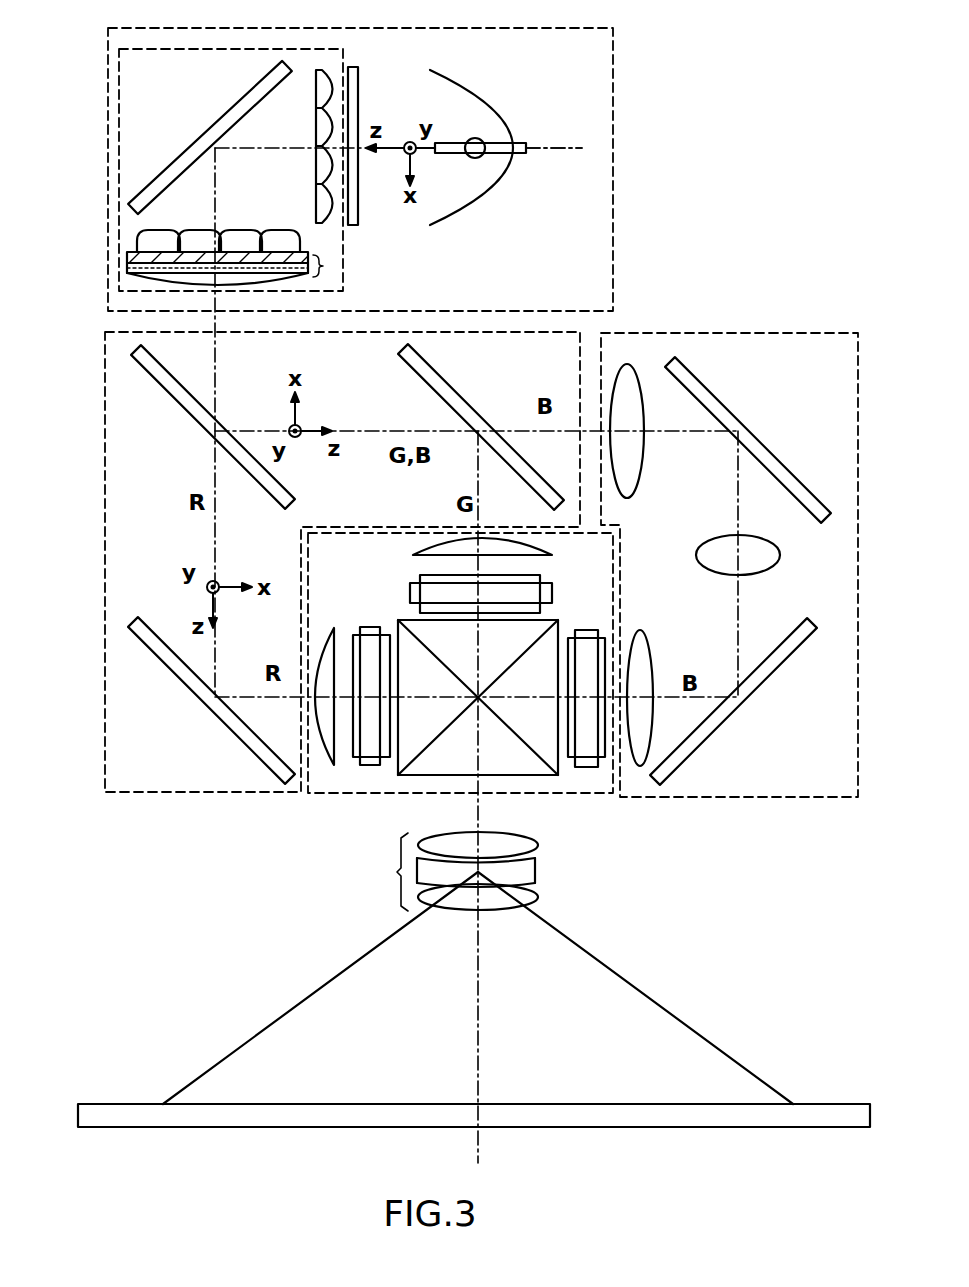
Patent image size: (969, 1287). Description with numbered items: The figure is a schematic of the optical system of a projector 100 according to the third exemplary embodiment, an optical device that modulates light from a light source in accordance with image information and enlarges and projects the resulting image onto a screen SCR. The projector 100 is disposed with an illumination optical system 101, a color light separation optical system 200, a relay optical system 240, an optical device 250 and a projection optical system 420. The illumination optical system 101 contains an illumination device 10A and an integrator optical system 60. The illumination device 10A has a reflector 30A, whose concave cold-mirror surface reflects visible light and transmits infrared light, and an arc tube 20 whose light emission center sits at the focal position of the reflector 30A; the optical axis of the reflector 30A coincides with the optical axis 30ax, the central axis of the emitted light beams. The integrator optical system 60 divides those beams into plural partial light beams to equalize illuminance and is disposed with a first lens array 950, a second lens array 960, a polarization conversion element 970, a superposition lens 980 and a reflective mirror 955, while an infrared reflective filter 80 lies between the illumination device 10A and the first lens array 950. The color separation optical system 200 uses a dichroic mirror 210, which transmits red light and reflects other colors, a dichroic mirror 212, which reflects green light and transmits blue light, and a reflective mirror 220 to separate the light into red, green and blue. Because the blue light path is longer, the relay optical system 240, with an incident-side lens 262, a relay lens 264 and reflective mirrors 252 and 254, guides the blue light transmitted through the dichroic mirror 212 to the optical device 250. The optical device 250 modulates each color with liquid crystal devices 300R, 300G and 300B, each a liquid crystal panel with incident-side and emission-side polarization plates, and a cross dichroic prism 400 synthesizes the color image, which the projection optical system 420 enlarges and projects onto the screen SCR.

The projector 100 is at (667, 42).
The illumination optical system 101 is at (108, 127).
The integrator optical system 60 is at (118, 185).
The reflective mirror 955 is at (268, 82).
The first lens array 950 is at (324, 226).
The infrared reflective filter 80 is at (353, 67).
The second lens array 960 is at (260, 231).
The polarization conversion element 970 is at (325, 266).
The superposition lens 980 is at (284, 288).
The reflector 30A is at (487, 104).
The arc tube 20 is at (468, 138).
The optical axis 30ax is at (562, 146).
The illumination device 10A is at (484, 210).
The color light separation optical system 200 is at (104, 407).
The dichroic mirror 210 is at (178, 415).
The dichroic mirror 212 is at (416, 380).
The relay optical system 240 is at (762, 797).
The reflective mirror 252 is at (726, 392).
The incident-side lens 262 is at (645, 448).
The relay lens 264 is at (766, 572).
The reflective mirror 254 is at (721, 740).
The optical device 250 is at (322, 795).
The liquid crystal device 300G is at (410, 593).
The liquid crystal device 300R is at (372, 767).
The cross dichroic prism 400 is at (515, 777).
The liquid crystal device 300B is at (585, 769).
The reflective mirror 220 is at (207, 715).
The projection optical system 420 is at (397, 872).
The screen SCR is at (832, 1104).